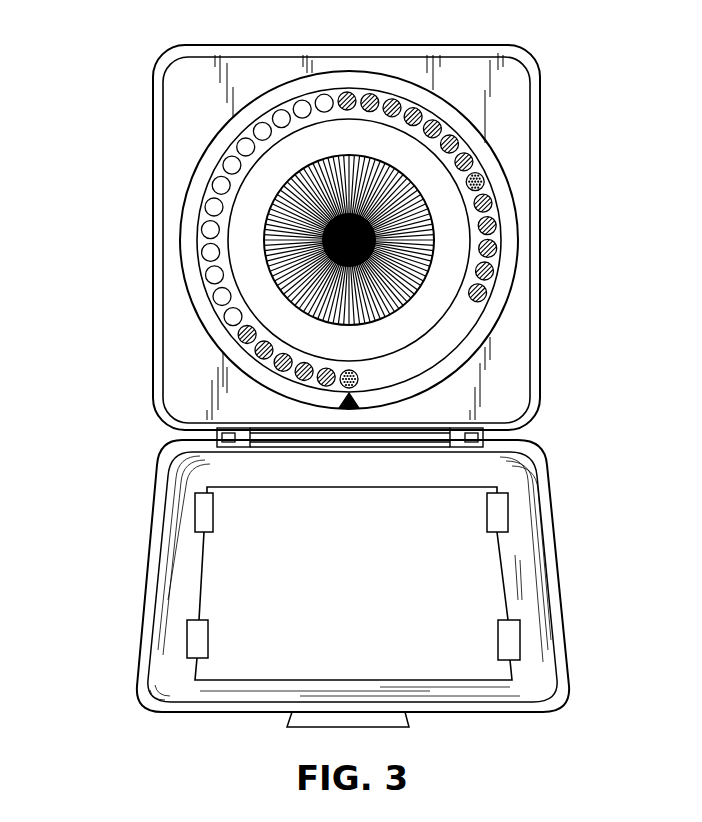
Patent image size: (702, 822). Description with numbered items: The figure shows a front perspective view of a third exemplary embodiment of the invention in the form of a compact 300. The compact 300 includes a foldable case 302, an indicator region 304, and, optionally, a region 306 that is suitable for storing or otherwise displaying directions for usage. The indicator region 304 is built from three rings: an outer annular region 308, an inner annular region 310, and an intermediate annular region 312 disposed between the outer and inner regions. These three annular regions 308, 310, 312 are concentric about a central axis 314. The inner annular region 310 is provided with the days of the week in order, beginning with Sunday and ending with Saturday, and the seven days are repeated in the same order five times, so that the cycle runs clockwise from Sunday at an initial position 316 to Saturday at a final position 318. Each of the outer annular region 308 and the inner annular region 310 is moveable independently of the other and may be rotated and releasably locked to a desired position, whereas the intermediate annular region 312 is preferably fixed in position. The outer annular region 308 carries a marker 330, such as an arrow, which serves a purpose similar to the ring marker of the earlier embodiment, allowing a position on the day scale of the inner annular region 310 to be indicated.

The compact 300 is at (104, 50).
The foldable case 302 is at (151, 409).
The indicator region 304 is at (197, 155).
The region for storing or displaying directions 306 is at (196, 585).
The outer annular region 308 is at (492, 180).
The inner annular region 310 is at (433, 323).
The intermediate annular region 312 is at (465, 313).
The central axis 314 is at (268, 270).
The initial position 316 is at (362, 358).
The final position 318 is at (421, 343).
The marker 330 is at (349, 397).